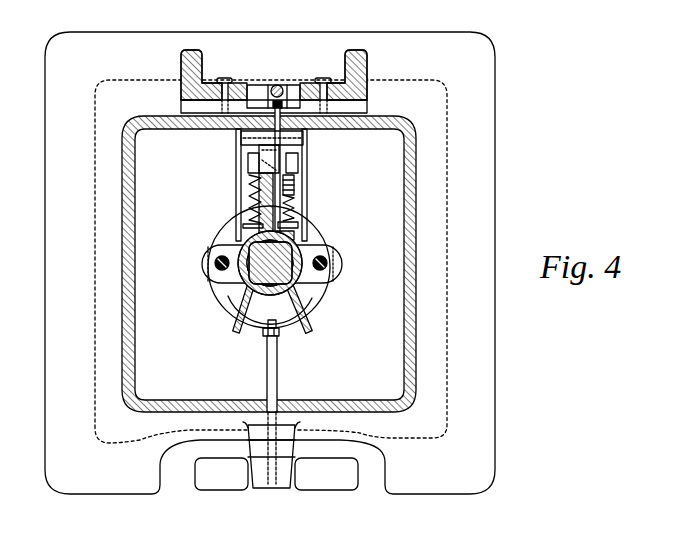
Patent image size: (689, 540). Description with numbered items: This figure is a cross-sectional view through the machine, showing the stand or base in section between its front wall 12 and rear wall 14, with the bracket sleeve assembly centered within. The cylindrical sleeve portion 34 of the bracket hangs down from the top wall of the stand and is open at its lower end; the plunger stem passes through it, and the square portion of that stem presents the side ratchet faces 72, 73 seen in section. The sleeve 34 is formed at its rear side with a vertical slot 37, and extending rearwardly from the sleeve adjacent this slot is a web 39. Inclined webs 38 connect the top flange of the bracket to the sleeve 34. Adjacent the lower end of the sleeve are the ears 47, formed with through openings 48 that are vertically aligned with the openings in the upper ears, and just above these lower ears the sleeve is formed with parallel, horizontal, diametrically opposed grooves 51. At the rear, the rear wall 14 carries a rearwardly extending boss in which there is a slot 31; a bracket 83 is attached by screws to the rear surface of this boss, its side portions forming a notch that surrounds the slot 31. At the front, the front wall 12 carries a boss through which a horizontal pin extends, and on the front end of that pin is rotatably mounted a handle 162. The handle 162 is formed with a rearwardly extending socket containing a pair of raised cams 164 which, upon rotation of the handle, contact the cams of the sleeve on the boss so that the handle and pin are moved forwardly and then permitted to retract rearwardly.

The front wall 12 is at (349, 402).
The rear wall 14 is at (358, 122).
The slot 31 is at (208, 83).
The bracket 83 is at (378, 63).
The cylindrical sleeve portion 34 is at (245, 243).
The web 39 is at (248, 195).
The vertical slot 37 is at (293, 231).
The grooves 51 is at (238, 284).
The ears 47 is at (330, 254).
The through openings 48 is at (334, 265).
The inclined webs 38 is at (318, 308).
The side face 72 is at (304, 250).
The side face 73 is at (238, 257).
The raised cams 164 is at (295, 447).
The handle 162 is at (228, 482).